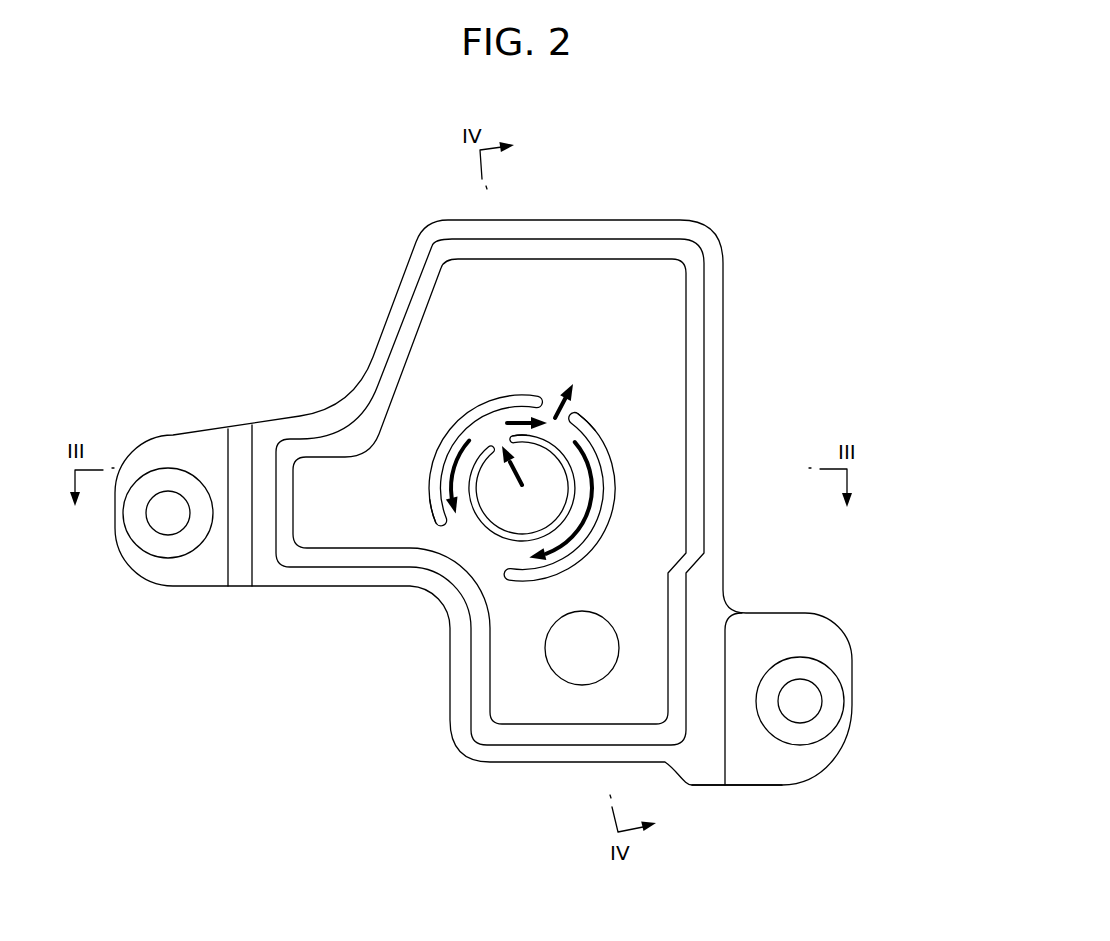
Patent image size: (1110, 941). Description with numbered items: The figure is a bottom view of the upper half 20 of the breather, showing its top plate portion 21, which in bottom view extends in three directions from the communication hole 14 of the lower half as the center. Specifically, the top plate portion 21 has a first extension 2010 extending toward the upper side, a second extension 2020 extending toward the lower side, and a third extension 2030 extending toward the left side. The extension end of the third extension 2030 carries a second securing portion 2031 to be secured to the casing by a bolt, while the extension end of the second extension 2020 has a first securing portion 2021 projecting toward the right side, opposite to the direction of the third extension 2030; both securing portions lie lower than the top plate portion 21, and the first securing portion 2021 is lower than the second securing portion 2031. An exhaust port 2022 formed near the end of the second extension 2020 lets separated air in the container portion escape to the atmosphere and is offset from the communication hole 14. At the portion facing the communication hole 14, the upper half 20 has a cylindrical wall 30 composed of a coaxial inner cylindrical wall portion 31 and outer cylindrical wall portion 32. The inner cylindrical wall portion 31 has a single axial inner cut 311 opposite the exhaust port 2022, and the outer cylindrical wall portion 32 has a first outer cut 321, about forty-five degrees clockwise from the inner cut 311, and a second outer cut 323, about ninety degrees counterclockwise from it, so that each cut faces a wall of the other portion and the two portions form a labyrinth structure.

The communication hole 14 is at (498, 512).
The upper half 20 is at (752, 206).
The top plate portion 21 is at (458, 338).
The cylindrical wall 30 is at (556, 533).
The inner cylindrical wall portion 31 is at (485, 520).
The inner cut 311 is at (494, 448).
The outer cylindrical wall portion 32 is at (465, 412).
The first outer cut 321 is at (580, 414).
The second outer cut 323 is at (467, 535).
The first extension 2010 is at (732, 222).
The second extension 2020 is at (727, 563).
The first securing portion 2021 is at (759, 798).
The exhaust port 2022 is at (558, 674).
The third extension 2030 is at (410, 590).
The second securing portion 2031 is at (170, 421).